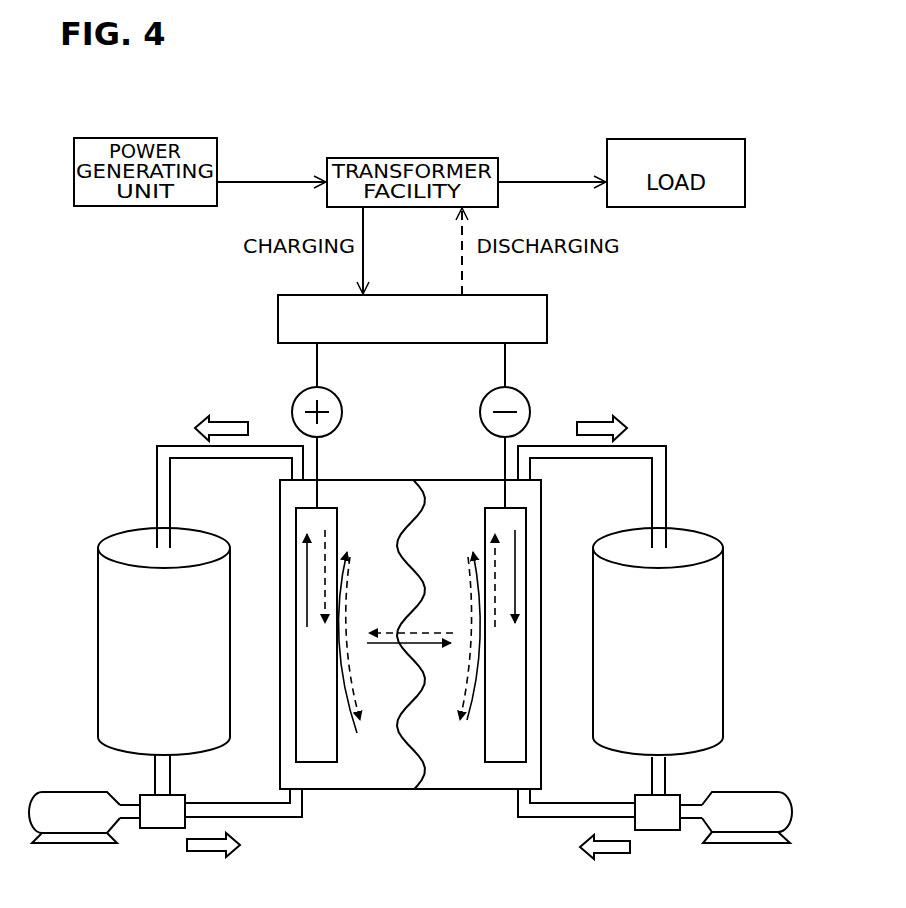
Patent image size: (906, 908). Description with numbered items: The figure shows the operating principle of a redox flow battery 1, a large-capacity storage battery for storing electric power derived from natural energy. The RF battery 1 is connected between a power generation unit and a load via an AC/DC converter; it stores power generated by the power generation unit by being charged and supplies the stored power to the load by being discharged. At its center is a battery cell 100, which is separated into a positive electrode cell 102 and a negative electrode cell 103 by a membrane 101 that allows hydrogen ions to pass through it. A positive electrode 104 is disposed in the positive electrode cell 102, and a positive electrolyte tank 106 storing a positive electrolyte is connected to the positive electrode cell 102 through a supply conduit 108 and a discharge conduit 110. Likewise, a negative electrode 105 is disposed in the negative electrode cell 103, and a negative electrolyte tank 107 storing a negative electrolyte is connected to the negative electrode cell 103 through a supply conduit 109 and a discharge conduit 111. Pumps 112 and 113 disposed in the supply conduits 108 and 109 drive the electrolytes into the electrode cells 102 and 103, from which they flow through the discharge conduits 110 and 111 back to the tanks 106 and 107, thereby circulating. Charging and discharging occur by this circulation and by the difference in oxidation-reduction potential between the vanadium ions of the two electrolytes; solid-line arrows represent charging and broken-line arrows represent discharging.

The redox flow battery 1 is at (580, 366).
The battery cell 100 is at (374, 477).
The membrane 101 is at (420, 769).
The positive electrode cell 102 is at (345, 790).
The negative electrode cell 103 is at (475, 790).
The positive electrode 104 is at (293, 735).
The negative electrode 105 is at (530, 735).
The positive electrolyte tank 106 is at (118, 537).
The negative electrolyte tank 107 is at (705, 537).
The supply conduit 108 is at (268, 818).
The supply conduit 109 is at (553, 818).
The discharge conduit 110 is at (173, 446).
The discharge conduit 111 is at (650, 446).
The pump 112 is at (58, 792).
The pump 113 is at (762, 792).